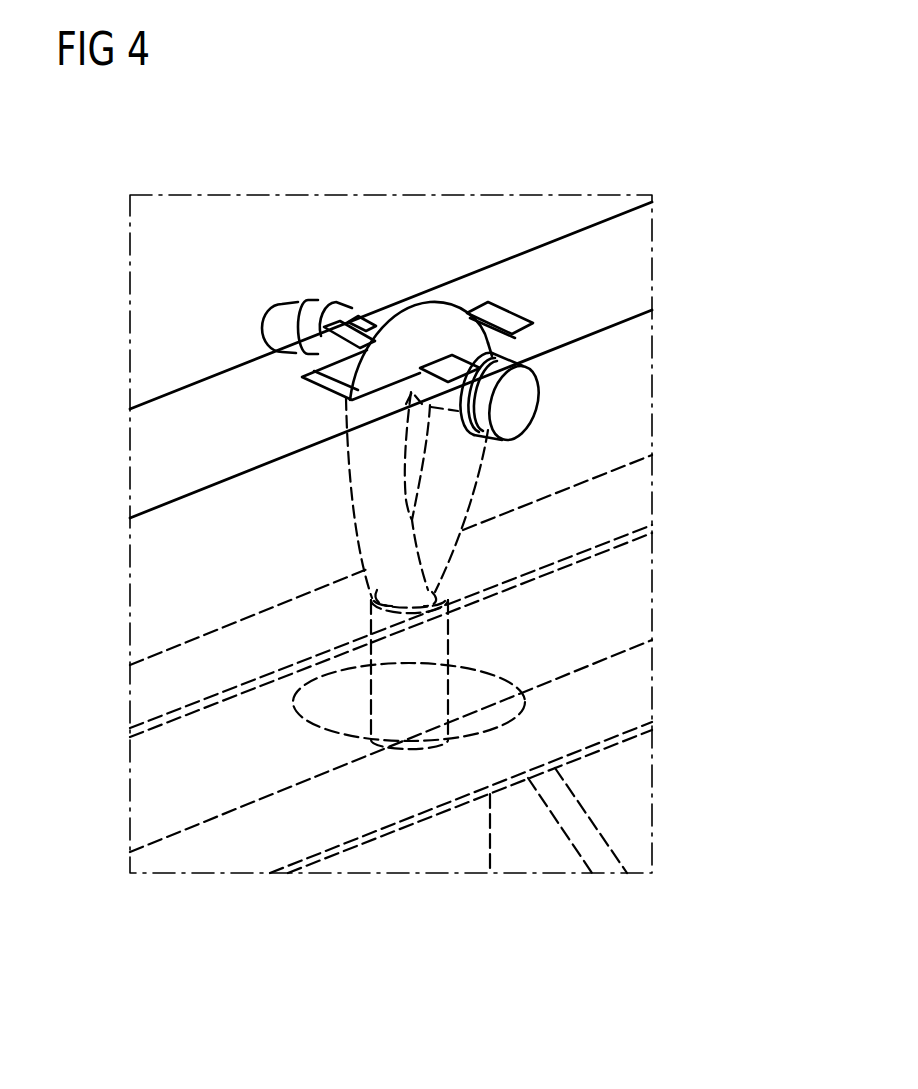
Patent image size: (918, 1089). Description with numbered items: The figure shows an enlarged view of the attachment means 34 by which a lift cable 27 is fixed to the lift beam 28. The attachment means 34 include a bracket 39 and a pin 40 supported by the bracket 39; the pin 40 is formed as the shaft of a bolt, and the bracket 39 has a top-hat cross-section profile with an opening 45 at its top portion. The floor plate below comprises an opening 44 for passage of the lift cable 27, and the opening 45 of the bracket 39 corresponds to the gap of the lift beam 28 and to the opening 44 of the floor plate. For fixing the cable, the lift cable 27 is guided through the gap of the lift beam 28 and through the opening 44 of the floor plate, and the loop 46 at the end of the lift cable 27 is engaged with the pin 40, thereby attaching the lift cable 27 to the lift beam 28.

The attachment means 34 is at (332, 322).
The bracket 39 is at (213, 433).
The pin 40 is at (365, 340).
The opening 45 is at (500, 332).
The lift cable 27 is at (564, 495).
The loop 46 is at (465, 478).
The opening 44 is at (322, 716).
The lift beam 28 is at (435, 858).